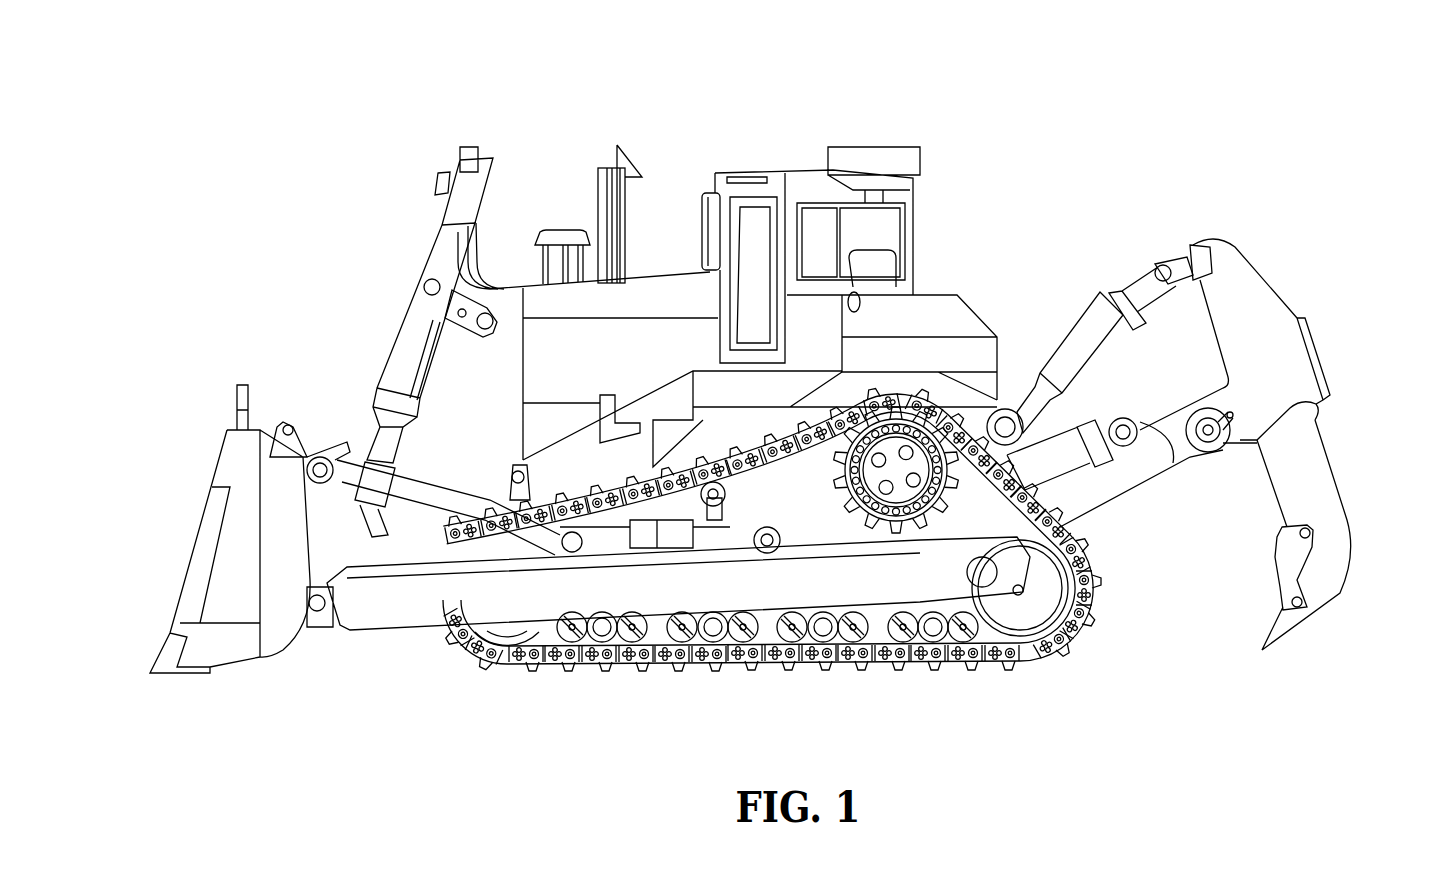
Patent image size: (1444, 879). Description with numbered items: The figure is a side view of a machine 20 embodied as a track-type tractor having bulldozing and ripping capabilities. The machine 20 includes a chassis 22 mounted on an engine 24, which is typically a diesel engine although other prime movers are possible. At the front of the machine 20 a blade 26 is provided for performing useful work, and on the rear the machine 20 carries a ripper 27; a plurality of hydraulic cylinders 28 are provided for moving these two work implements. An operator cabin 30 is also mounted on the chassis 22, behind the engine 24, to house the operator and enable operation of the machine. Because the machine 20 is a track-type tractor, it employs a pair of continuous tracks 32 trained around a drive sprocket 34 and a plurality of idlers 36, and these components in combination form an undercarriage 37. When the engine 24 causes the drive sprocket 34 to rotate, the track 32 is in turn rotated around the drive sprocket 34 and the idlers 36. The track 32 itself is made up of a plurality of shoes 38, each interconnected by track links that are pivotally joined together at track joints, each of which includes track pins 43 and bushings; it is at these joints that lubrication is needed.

The machine 20 is at (771, 309).
The chassis 22 is at (768, 573).
The engine 24 is at (647, 297).
The blade 26 is at (240, 593).
The ripper 27 is at (1298, 477).
The hydraulic cylinders 28 is at (1110, 327).
The operator cabin 30 is at (825, 227).
The continuous track 32 is at (1031, 688).
The drive sprocket 34 is at (898, 500).
The idlers 36 is at (517, 622).
The undercarriage 37 is at (1196, 388).
The shoes 38 is at (811, 668).
The track pins 43 is at (755, 645).